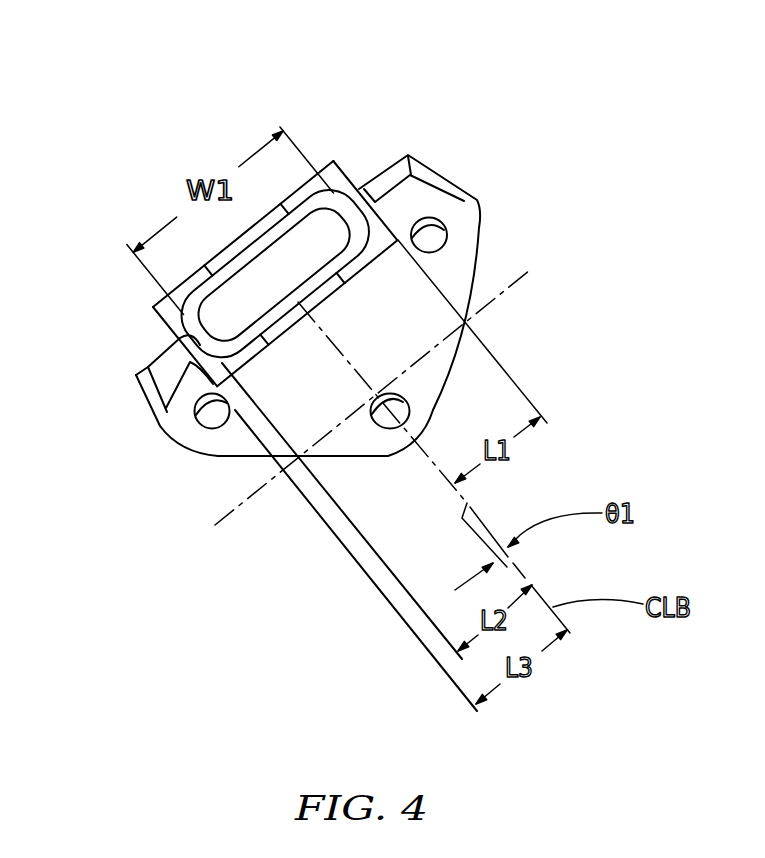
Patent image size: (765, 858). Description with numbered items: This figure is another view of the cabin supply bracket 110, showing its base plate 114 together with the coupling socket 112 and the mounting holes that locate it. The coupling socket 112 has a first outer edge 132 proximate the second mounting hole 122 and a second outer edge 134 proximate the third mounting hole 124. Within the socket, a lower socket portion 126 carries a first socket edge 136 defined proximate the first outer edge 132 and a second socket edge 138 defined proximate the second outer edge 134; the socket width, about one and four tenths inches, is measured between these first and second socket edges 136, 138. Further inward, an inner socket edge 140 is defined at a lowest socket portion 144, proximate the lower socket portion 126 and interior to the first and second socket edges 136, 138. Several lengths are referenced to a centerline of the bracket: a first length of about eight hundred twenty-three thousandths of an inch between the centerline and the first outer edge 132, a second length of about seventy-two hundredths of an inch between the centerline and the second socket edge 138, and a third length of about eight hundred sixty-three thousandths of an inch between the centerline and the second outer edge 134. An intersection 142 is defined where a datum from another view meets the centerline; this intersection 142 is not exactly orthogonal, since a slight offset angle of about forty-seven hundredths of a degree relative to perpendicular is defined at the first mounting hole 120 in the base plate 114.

The cabin supply bracket 110 is at (600, 103).
The coupling socket 112 is at (360, 186).
The base plate 114 is at (465, 236).
The first mounting hole 120 is at (384, 428).
The second mounting hole 122 is at (440, 232).
The third mounting hole 124 is at (207, 429).
The lower socket portion 126 is at (178, 405).
The first outer edge 132 is at (362, 211).
The second outer edge 134 is at (150, 309).
The first socket edge 136 is at (333, 164).
The second socket edge 138 is at (172, 336).
The inner socket edge 140 is at (190, 362).
The intersection 142 is at (379, 394).
The lowest socket portion 144 is at (256, 318).